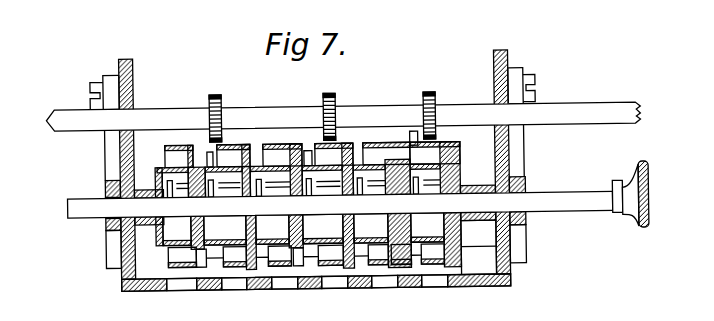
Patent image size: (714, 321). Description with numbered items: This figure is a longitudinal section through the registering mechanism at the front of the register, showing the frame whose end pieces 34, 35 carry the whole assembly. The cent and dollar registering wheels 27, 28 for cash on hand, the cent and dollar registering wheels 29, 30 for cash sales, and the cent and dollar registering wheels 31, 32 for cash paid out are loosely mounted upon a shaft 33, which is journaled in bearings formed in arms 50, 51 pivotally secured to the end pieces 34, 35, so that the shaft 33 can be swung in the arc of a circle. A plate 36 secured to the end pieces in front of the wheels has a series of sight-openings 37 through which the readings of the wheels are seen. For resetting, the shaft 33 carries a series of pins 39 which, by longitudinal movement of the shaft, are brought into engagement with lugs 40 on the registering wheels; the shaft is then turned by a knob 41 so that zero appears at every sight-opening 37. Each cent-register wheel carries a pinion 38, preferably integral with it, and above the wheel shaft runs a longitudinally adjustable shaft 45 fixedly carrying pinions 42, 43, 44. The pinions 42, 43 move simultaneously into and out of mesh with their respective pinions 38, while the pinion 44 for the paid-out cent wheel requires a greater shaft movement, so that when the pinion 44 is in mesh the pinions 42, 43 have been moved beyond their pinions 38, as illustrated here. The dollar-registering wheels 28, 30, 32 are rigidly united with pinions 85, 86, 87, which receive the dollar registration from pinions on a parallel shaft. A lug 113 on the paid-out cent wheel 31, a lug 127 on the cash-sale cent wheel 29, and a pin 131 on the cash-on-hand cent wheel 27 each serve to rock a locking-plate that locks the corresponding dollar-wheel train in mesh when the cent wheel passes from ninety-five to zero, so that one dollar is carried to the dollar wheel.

The shaft 45 is at (70, 122).
The pinion 44 is at (219, 90).
The pinion 43 is at (331, 96).
The pinion 42 is at (432, 93).
The pin 131 is at (413, 133).
The lug 127 is at (307, 150).
The lug 113 is at (208, 152).
The end piece 35 is at (123, 155).
The end piece 34 is at (510, 148).
The pins 39 is at (170, 190).
The lugs 40 is at (233, 184).
The shaft 33 is at (340, 204).
The arm 51 is at (113, 250).
The arm 50 is at (526, 245).
The dollar registering wheel 32 is at (182, 257).
The cent registering wheel 31 is at (234, 257).
The dollar registering wheel 30 is at (279, 256).
The cent registering wheel 29 is at (330, 255).
The dollar registering wheel 28 is at (378, 255).
The pinion 85 is at (401, 254).
The cent registering wheel 27 is at (432, 254).
The pinion 87 is at (203, 263).
The pinion 86 is at (298, 262).
The pinion 38 is at (461, 238).
The sight-openings 37 is at (182, 290).
The plate 36 is at (484, 288).
The knob 41 is at (630, 208).